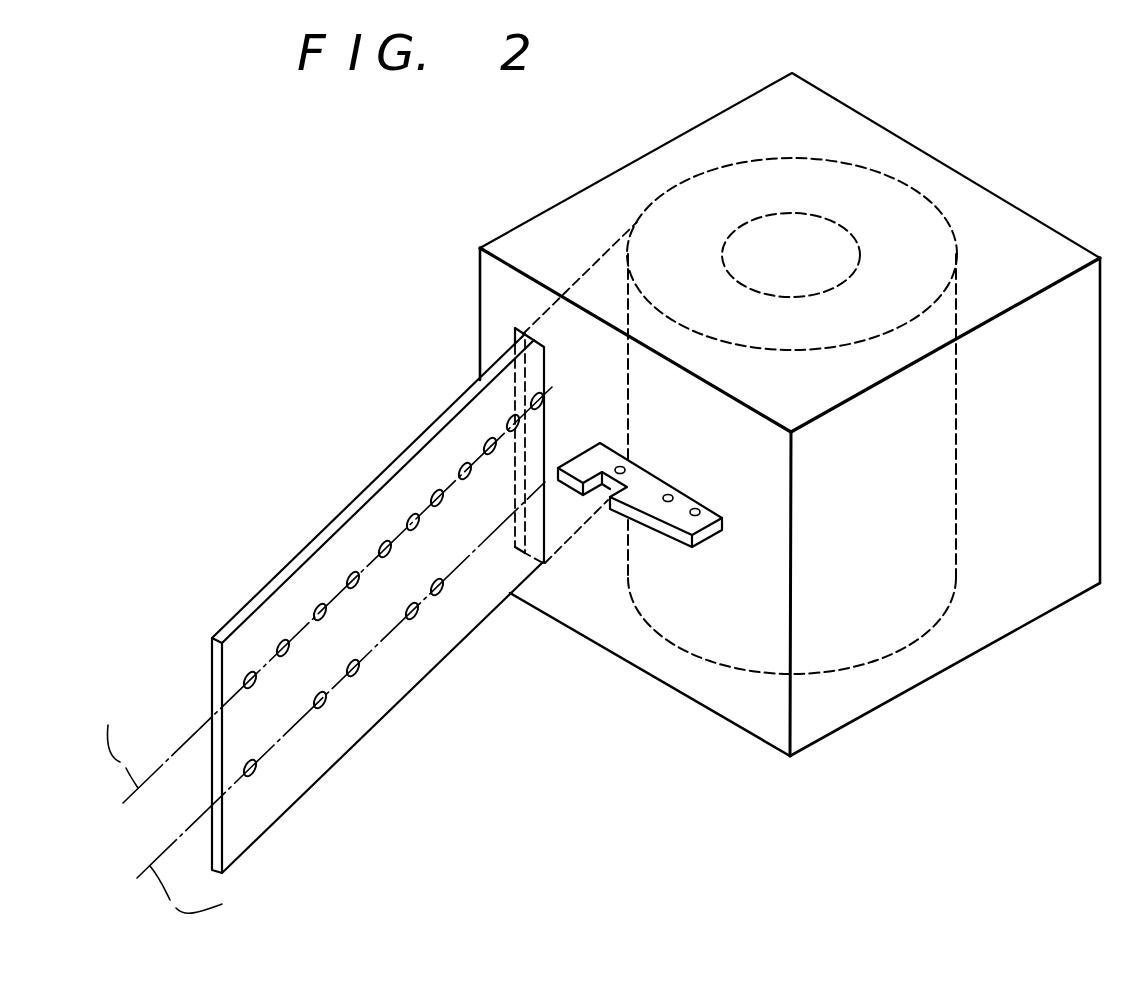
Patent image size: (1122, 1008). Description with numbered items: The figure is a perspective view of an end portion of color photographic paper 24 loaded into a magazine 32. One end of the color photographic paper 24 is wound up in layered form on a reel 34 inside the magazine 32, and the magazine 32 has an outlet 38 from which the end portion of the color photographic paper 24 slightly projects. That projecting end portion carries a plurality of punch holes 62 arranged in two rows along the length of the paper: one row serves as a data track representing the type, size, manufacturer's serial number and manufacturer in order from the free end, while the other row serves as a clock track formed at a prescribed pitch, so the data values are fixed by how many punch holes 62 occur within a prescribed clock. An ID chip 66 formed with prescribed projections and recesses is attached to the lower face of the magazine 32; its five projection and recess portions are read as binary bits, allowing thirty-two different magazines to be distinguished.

The color photographic paper 24 is at (410, 447).
The magazine 32 is at (858, 112).
The reel 34 is at (860, 247).
The outlet 38 is at (525, 578).
The punch holes 62 is at (316, 606).
The ID chip 66 is at (670, 537).